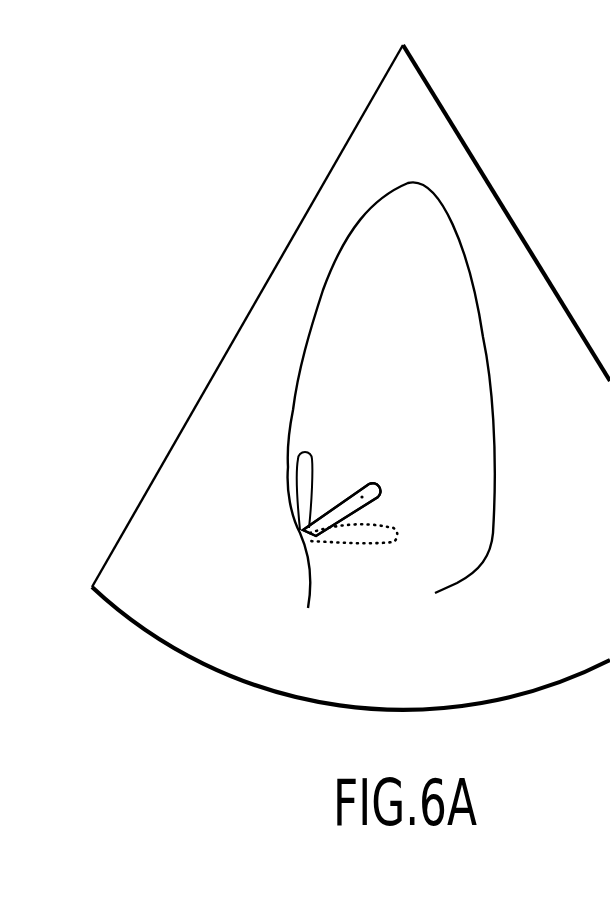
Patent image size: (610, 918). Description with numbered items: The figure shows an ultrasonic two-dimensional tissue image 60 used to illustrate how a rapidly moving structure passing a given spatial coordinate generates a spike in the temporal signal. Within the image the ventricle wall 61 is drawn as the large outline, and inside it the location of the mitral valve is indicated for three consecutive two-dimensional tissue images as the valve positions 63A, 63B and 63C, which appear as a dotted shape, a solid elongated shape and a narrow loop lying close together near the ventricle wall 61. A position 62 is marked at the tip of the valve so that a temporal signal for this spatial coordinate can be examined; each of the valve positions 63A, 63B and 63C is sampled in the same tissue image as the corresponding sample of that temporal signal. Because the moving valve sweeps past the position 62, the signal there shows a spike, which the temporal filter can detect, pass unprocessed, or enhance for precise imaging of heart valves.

The ultrasonic 2D tissue image 60 is at (347, 140).
The ventricle wall 61 is at (367, 205).
The position 62 is at (358, 490).
The location of the mitral valve in a first 2D tissue image 63A is at (355, 537).
The location of the mitral valve in a second 2D tissue image 63B is at (338, 505).
The location of the mitral valve in a third 2D tissue image 63C is at (302, 493).